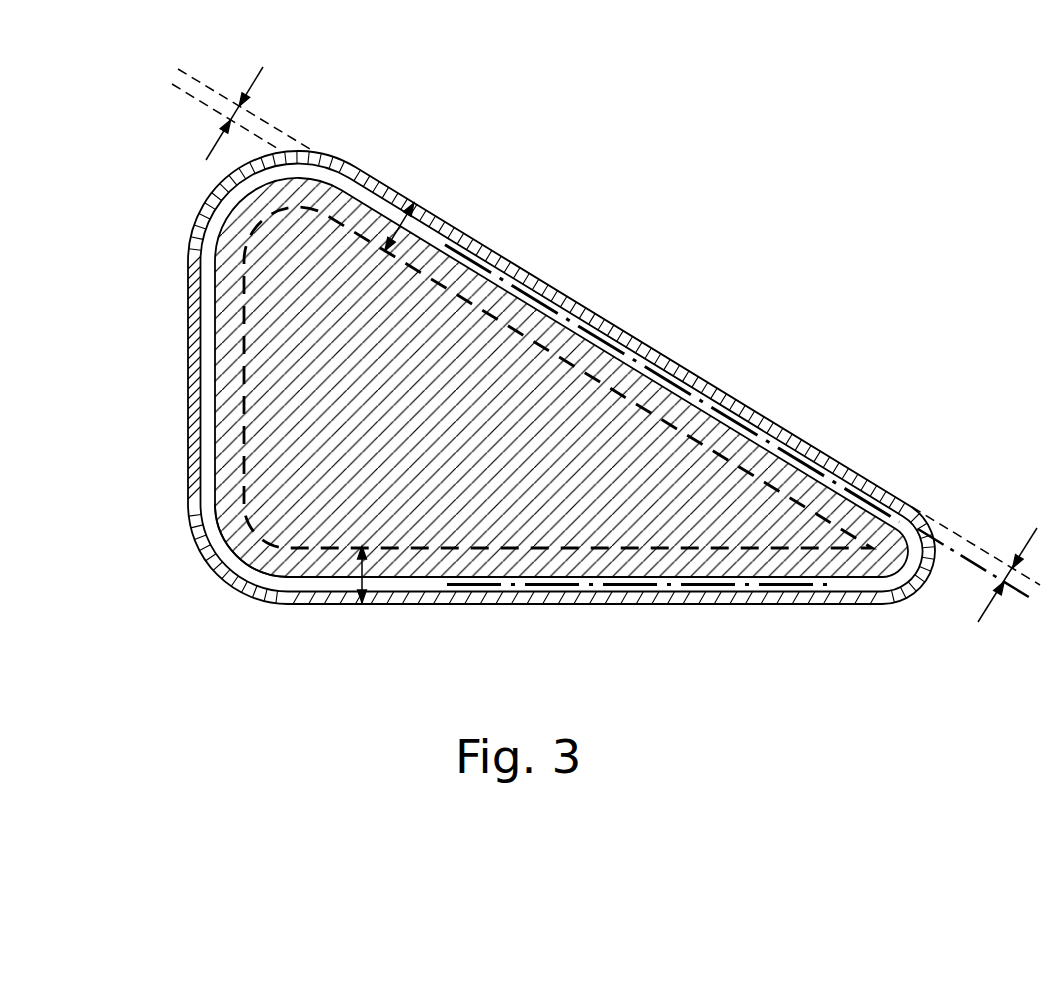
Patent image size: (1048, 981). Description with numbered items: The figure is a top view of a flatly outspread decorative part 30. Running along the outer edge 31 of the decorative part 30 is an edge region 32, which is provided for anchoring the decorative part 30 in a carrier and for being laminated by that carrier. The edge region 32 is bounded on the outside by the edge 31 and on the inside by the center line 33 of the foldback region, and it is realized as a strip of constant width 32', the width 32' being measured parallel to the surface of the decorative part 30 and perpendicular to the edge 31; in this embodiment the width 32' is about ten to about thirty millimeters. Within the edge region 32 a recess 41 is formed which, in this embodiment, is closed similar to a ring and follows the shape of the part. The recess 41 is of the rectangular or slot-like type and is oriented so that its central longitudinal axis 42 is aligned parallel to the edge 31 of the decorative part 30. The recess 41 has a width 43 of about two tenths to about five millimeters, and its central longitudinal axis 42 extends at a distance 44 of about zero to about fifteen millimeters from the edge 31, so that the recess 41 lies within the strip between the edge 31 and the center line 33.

The decorative part 30 is at (440, 421).
The edge 31 is at (571, 362).
The edge region 32 is at (558, 377).
The width of the edge region 32' is at (438, 415).
The center line of the foldback region 33 is at (251, 521).
The recess 41 is at (203, 291).
The central longitudinal axis 42 is at (591, 329).
The width of the recess 43 is at (236, 113).
The distance 44 is at (1006, 562).